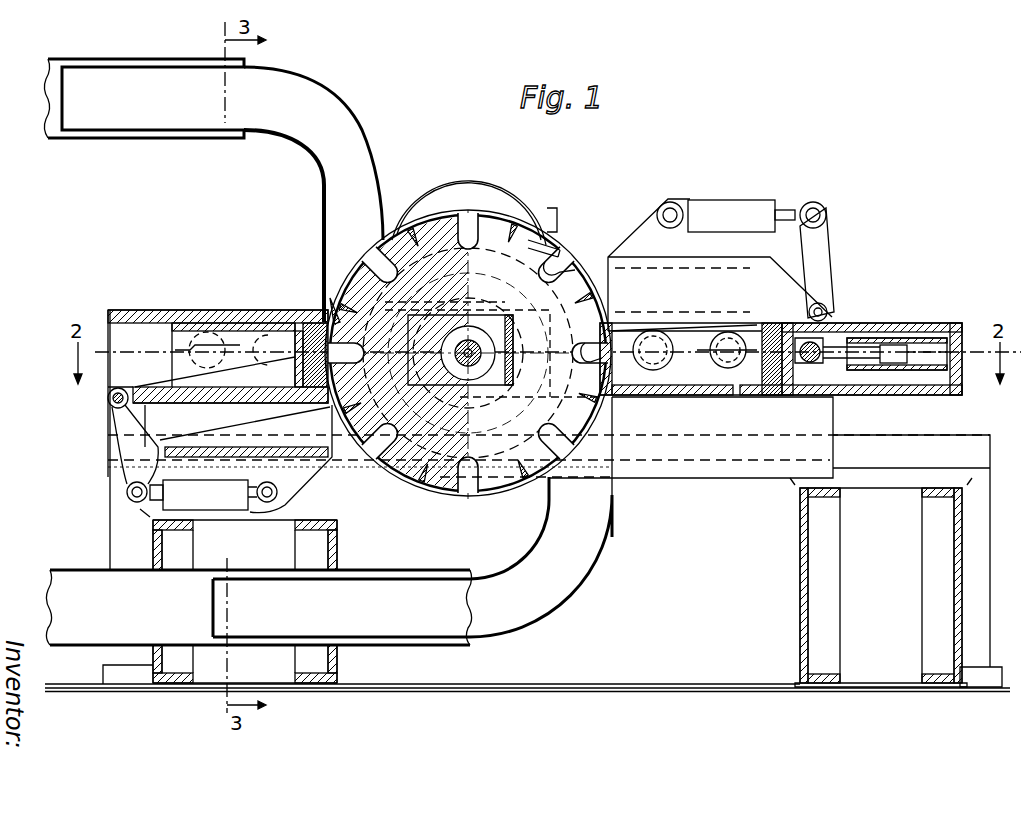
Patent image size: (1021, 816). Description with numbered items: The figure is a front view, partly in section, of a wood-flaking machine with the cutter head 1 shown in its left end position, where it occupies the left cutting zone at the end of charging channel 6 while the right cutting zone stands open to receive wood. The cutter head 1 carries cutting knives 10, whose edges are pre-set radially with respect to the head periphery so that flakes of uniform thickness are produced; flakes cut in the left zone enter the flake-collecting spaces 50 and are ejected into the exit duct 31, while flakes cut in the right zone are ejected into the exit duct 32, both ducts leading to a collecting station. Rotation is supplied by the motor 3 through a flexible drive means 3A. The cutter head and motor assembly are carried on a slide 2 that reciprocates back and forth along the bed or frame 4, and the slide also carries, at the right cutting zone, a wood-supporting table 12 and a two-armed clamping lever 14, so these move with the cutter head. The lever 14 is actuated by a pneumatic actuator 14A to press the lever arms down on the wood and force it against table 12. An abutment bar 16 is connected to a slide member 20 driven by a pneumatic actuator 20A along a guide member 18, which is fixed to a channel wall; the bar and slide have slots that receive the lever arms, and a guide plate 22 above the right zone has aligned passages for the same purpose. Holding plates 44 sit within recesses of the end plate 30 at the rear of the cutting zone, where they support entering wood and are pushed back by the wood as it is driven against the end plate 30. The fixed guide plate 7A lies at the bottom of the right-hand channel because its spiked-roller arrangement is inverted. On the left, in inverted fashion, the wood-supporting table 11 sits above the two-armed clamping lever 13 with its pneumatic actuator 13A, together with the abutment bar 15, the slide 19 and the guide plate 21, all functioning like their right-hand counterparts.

The cutter head 1 is at (521, 245).
The slide 2 is at (757, 400).
The motor 3 is at (428, 178).
The flexible drive means 3A is at (560, 285).
The bed or frame 4 is at (880, 440).
The charging channel 6 is at (484, 320).
The fixed guide plate 7A is at (781, 376).
The cutting knife 10 is at (556, 250).
The wood-supporting table 11 is at (236, 335).
The wood-supporting table 12 is at (693, 400).
The two-armed clamping lever 13 is at (300, 345).
The pneumatic actuator 13A is at (202, 495).
The two-armed clamping lever 14 is at (700, 285).
The pneumatic actuator 14A is at (741, 216).
The abutment bar 15 is at (332, 300).
The abutment bar 16 is at (775, 330).
The guide member 18 is at (958, 330).
The slide 19 is at (175, 330).
The slide member 20 is at (852, 323).
The pneumatic actuator 20A is at (893, 348).
The guide plate 21 is at (150, 390).
The guide plate 22 is at (822, 308).
The end plate 30 is at (687, 356).
The exit duct 31 is at (335, 125).
The exit duct 32 is at (560, 526).
The holding plates 44 is at (207, 345).
The flake-collecting spaces 50 is at (585, 345).